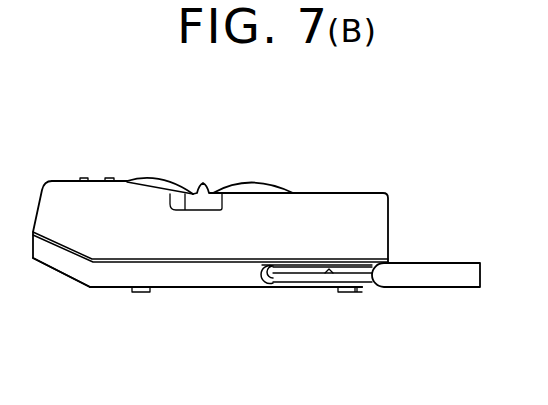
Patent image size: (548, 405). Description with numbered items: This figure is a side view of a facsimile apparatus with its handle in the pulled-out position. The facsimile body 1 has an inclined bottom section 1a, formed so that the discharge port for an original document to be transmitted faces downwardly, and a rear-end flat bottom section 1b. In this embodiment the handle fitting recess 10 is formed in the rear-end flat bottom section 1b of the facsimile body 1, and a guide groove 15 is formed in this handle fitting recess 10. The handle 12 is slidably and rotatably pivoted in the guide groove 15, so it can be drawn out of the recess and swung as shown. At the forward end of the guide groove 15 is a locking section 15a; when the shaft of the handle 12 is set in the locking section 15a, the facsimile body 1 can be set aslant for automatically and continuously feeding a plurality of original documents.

The facsimile body 1 is at (373, 230).
The inclined bottom section 1a is at (68, 275).
The rear-end flat bottom section 1b is at (210, 287).
The handle fitting recess 10 is at (350, 258).
The handle 12 is at (452, 275).
The guide groove 15 is at (332, 287).
The locking section 15a is at (283, 286).